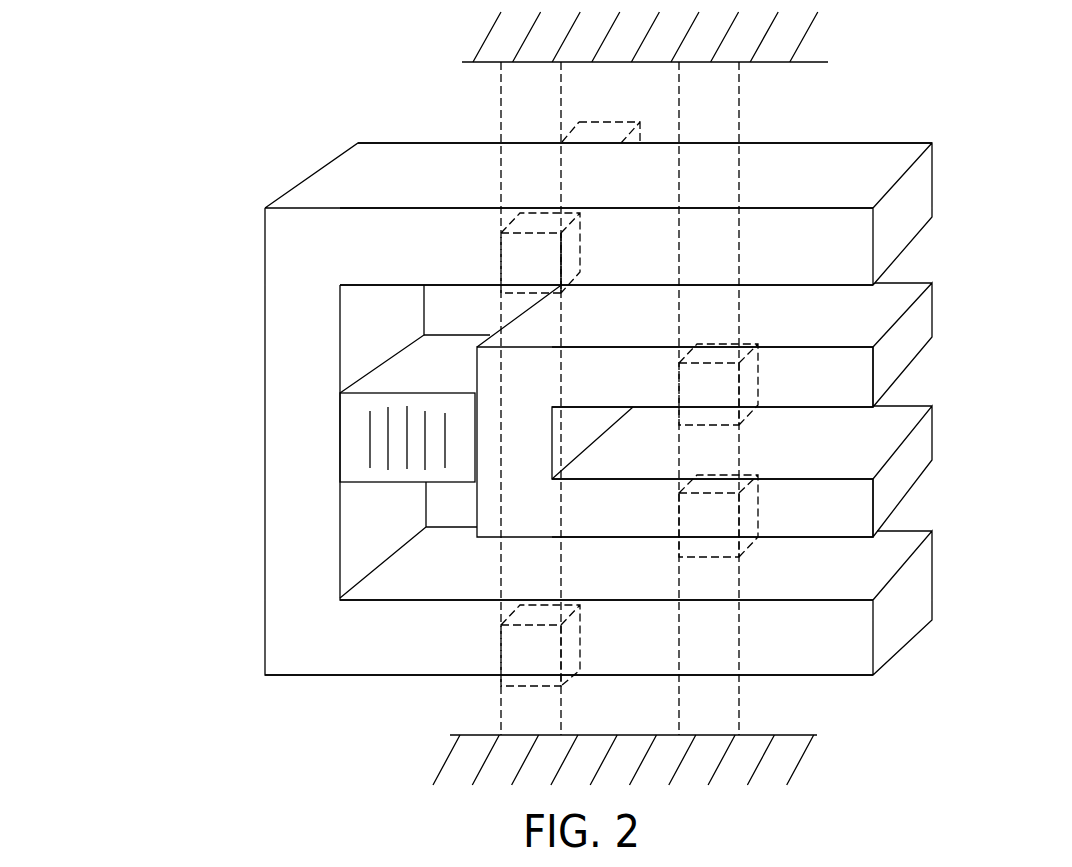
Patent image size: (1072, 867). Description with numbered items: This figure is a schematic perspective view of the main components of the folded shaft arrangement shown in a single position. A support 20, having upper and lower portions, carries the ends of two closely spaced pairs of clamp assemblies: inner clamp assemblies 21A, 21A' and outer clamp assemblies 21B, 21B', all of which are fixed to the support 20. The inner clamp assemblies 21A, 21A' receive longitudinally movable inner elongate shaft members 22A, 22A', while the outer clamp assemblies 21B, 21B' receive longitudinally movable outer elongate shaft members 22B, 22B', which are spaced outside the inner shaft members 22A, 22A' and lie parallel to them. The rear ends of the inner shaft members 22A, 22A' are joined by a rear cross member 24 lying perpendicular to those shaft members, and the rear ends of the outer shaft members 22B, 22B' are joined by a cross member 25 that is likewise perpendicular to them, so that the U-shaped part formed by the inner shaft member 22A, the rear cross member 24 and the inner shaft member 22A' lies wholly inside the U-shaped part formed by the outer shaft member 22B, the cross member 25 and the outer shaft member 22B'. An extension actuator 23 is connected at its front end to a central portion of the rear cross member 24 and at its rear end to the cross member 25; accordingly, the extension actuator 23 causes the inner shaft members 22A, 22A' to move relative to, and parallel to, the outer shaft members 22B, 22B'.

The support 20 is at (502, 32).
The inner clamp assembly 21A is at (815, 245).
The inner clamp assembly 21A' is at (801, 618).
The outer clamp assembly 21B is at (487, 182).
The outer clamp assembly 21B' is at (462, 670).
The inner elongate shaft member 22A is at (800, 332).
The inner elongate shaft member 22A' is at (807, 450).
The outer elongate shaft member 22B is at (694, 212).
The outer elongate shaft member 22B' is at (659, 603).
The extension actuator 23 is at (362, 415).
The rear cross member 24 is at (492, 485).
The cross member 25 is at (293, 463).